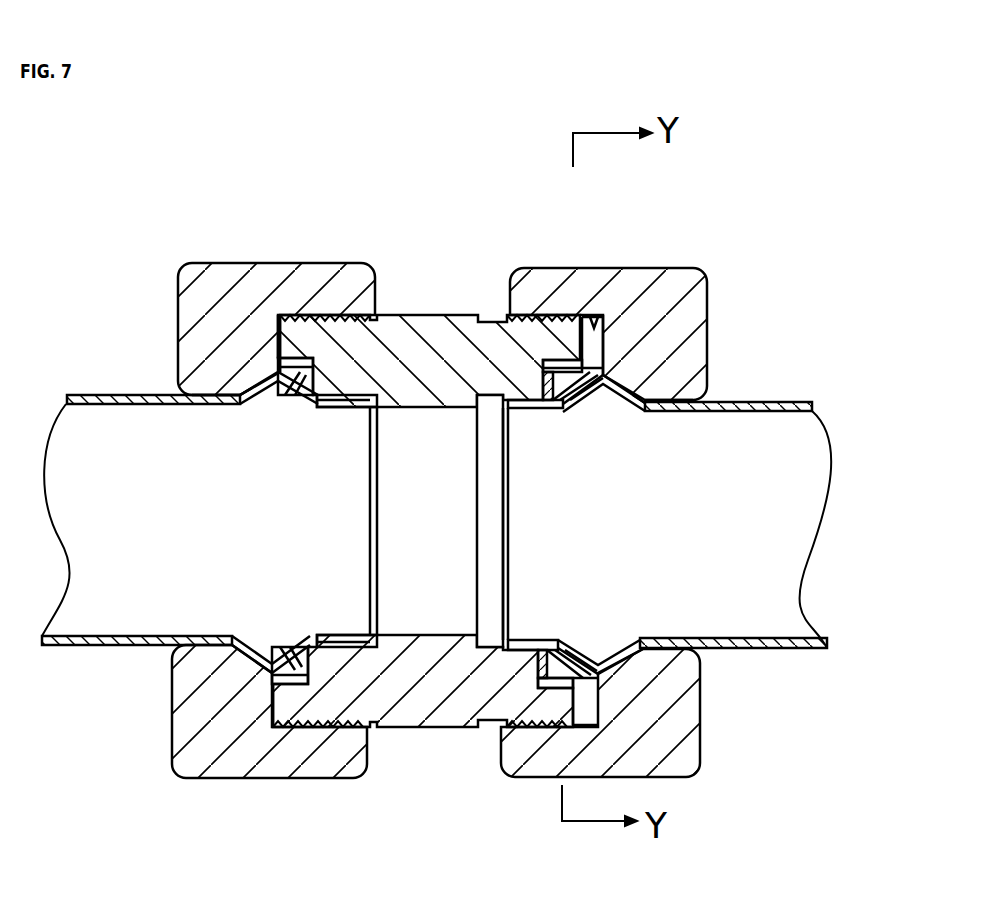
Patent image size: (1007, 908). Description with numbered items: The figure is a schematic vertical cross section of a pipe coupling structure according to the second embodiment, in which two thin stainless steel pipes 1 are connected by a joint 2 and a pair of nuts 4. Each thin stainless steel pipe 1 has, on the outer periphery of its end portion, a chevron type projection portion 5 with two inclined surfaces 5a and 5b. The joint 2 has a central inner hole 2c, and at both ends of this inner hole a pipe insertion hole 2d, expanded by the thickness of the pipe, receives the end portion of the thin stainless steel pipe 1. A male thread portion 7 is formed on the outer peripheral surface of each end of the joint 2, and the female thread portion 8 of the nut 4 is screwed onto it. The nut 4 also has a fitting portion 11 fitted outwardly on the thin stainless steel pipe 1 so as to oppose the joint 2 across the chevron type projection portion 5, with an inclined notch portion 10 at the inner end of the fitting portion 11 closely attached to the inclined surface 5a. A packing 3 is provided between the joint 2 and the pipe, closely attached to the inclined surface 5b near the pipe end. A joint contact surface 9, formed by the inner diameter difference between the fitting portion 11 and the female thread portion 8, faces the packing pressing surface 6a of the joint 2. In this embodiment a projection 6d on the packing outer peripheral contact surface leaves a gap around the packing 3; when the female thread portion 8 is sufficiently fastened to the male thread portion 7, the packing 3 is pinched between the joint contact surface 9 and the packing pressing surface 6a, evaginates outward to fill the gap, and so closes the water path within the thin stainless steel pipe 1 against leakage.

The thin stainless steel pipe 1 is at (83, 397).
The joint 2 is at (434, 730).
The inner hole 2c is at (425, 410).
The pipe insertion hole 2d is at (356, 410).
The packing 3 is at (278, 330).
The nut 4 is at (296, 260).
The chevron type projection portion 5 is at (447, 523).
The inclined surface 5a is at (248, 397).
The inclined surface 5b is at (287, 382).
The packing pressing surface 6a is at (541, 360).
The projection 6d is at (285, 350).
The male thread portion 7 is at (328, 316).
The female thread portion 8 is at (287, 320).
The joint contact surface 9 is at (599, 320).
The inclined notch portion 10 is at (241, 406).
The fitting portion 11 is at (204, 377).